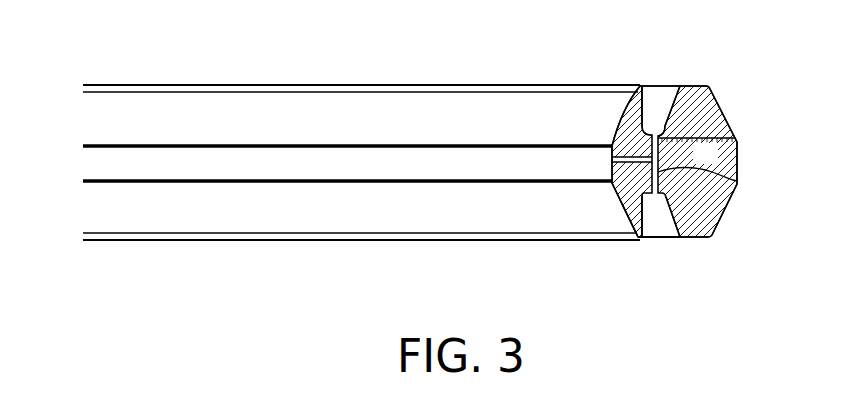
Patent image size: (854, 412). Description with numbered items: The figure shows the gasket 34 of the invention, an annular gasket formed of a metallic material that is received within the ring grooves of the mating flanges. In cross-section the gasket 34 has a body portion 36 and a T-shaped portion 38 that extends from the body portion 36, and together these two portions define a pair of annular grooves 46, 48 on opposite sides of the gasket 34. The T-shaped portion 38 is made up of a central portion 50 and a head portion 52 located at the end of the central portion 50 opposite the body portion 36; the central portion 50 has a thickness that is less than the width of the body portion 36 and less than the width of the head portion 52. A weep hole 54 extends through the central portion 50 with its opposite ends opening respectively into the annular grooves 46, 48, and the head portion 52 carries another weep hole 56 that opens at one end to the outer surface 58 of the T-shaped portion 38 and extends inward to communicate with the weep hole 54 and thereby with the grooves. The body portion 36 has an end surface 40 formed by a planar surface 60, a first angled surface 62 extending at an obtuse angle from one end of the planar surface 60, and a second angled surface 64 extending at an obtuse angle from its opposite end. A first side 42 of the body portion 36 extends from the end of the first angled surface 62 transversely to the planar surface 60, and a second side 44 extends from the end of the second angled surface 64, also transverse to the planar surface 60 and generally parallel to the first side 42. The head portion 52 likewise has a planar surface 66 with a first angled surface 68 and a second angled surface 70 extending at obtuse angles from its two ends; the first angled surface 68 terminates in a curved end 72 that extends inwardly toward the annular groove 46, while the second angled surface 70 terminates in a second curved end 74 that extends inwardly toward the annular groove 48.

The gasket 34 is at (450, 91).
The body portion 36 is at (696, 162).
The T-shaped portion 38 is at (657, 83).
The end surface 40 is at (736, 192).
The first side 42 is at (704, 84).
The second side 44 is at (712, 240).
The annular groove 46 is at (662, 95).
The annular groove 48 is at (663, 240).
The central portion 50 is at (735, 138).
The head portion 52 is at (619, 196).
The weep hole 54 is at (738, 182).
The weep hole 56 is at (611, 146).
The outer surface 58 is at (613, 188).
The planar surface 60 is at (740, 147).
The first angled surface 62 is at (723, 103).
The second angled surface 64 is at (722, 217).
The planar surface 66 is at (586, 182).
The first angled surface 68 is at (635, 118).
The second angled surface 70 is at (629, 219).
The curved end 72 is at (639, 87).
The second curved end 74 is at (640, 240).